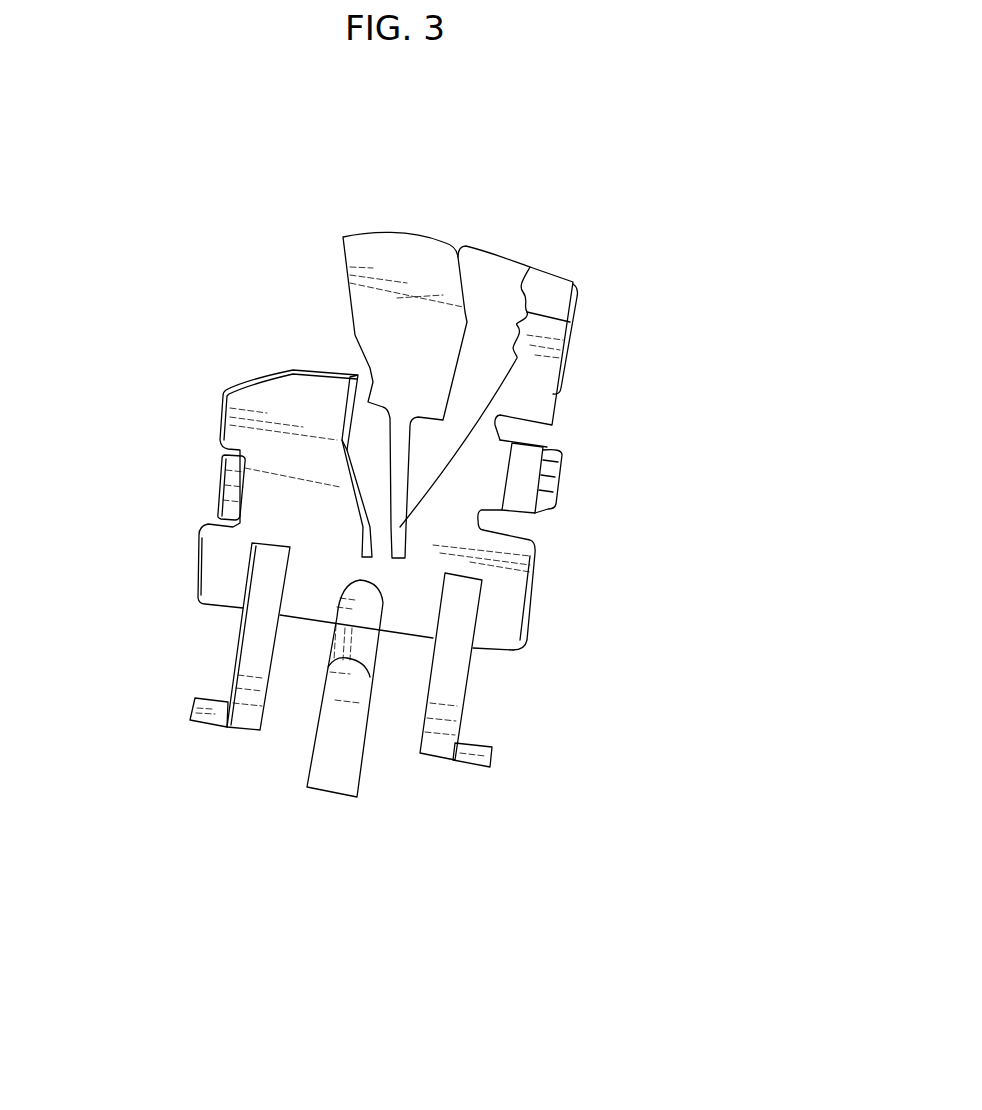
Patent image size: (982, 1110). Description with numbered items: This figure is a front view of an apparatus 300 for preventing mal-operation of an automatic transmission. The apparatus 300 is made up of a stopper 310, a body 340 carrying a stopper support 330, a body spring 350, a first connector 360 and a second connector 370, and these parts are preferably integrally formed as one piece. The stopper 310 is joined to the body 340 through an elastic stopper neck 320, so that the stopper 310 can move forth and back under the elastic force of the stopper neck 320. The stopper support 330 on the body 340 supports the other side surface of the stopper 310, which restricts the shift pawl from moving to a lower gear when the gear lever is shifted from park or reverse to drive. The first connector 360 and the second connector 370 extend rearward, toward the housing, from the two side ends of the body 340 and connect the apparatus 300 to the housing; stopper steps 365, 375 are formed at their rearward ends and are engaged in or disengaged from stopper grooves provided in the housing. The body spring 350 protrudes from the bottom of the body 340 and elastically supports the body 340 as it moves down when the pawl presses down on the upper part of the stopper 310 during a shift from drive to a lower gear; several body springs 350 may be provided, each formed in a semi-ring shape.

The apparatus for preventing mal-operation 300 is at (397, 538).
The stopper 310 is at (347, 273).
The stopper neck 320 is at (380, 475).
The stopper support 330 is at (547, 319).
The body 340 is at (550, 382).
The body spring 350 is at (440, 747).
The first connector 360 is at (223, 498).
The stopper step 365 is at (227, 470).
The second connector 370 is at (555, 503).
The stopper step 375 is at (555, 470).